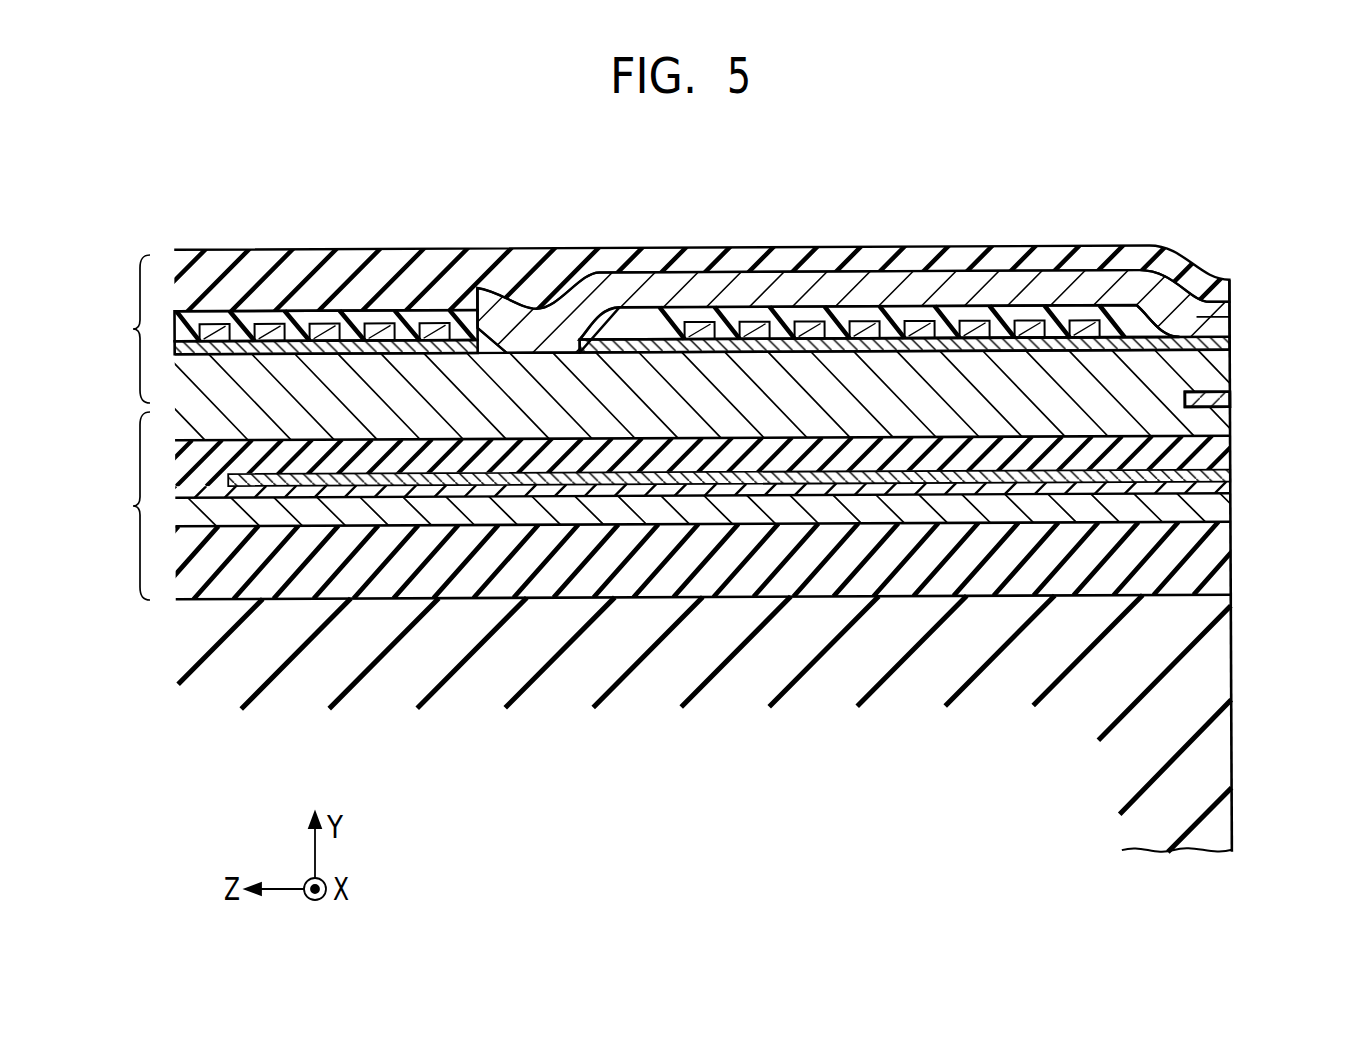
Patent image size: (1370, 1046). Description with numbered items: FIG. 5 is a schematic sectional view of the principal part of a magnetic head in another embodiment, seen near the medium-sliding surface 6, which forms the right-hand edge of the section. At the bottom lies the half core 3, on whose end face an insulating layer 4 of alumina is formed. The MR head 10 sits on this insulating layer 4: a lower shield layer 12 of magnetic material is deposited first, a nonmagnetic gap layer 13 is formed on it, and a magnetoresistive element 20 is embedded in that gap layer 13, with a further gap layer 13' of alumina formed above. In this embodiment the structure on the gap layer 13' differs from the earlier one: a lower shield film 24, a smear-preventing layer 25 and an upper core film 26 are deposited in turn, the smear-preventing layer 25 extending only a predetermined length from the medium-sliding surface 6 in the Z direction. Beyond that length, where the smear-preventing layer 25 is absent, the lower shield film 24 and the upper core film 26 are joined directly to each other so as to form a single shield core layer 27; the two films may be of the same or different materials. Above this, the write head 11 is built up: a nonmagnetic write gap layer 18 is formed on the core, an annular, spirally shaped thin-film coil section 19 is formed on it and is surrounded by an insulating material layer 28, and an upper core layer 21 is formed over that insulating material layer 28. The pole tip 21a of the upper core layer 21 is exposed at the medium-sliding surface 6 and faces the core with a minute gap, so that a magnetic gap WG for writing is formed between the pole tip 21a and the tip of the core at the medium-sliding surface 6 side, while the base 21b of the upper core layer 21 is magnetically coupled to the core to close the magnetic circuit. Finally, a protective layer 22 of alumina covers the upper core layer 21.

The half core 3 is at (1200, 660).
The insulating layer 4 is at (1190, 575).
The medium-sliding surface 6 is at (1234, 745).
The MR head 10 is at (124, 506).
The write head 11 is at (124, 329).
The lower shield layer 12 is at (980, 518).
The gap layer 13 is at (741, 533).
The gap layer 13' is at (776, 485).
The write gap layer 18 is at (1109, 310).
The thin-film coil section 19 is at (326, 330).
The magnetoresistive element 20 is at (1233, 490).
The upper core layer 21 is at (770, 295).
The pole tip 21a is at (1197, 317).
The base 21b is at (548, 345).
The protective layer 22 is at (442, 292).
The lower shield film 24 is at (1217, 455).
The smear-preventing layer 25 is at (1220, 400).
The upper core film 26 is at (1207, 365).
The shield core layer 27 is at (1165, 387).
The insulating material layer 28 is at (198, 322).
The magnetic gap for writing WG is at (1232, 338).